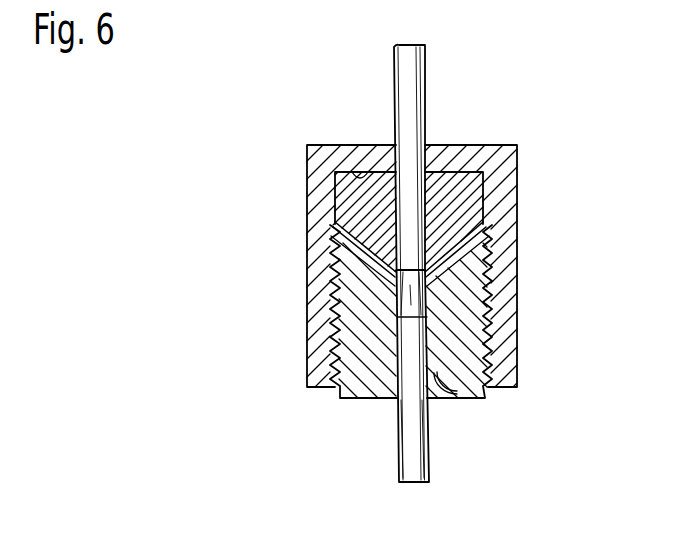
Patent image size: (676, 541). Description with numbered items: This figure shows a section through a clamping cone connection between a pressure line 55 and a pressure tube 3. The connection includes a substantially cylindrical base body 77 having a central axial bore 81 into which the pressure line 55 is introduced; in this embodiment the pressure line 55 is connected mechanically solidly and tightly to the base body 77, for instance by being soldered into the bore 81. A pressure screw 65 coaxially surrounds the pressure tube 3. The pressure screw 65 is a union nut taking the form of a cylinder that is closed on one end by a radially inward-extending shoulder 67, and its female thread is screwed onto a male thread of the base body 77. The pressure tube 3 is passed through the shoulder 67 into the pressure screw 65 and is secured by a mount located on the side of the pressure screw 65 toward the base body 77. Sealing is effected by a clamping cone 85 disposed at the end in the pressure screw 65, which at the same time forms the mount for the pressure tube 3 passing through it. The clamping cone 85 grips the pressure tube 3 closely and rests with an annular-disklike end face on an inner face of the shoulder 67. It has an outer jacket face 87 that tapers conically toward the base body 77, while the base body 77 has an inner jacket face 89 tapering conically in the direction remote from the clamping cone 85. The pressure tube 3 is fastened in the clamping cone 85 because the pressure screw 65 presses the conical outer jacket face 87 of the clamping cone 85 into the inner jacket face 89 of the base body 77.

The pressure tube 3 is at (416, 72).
The pressure line 55 is at (408, 448).
The pressure screw 65 is at (308, 183).
The shoulder 67 is at (353, 172).
The base body 77 is at (333, 349).
The central axial bore 81 is at (460, 398).
The clamping cone 85 is at (470, 190).
The outer jacket face 87 is at (331, 242).
The inner jacket face 89 is at (455, 253).